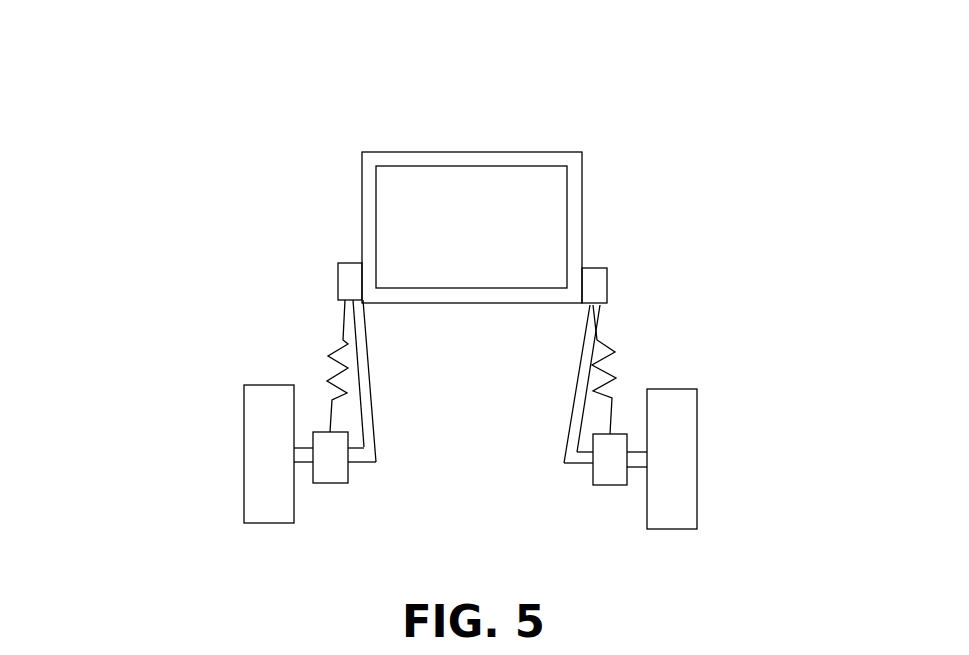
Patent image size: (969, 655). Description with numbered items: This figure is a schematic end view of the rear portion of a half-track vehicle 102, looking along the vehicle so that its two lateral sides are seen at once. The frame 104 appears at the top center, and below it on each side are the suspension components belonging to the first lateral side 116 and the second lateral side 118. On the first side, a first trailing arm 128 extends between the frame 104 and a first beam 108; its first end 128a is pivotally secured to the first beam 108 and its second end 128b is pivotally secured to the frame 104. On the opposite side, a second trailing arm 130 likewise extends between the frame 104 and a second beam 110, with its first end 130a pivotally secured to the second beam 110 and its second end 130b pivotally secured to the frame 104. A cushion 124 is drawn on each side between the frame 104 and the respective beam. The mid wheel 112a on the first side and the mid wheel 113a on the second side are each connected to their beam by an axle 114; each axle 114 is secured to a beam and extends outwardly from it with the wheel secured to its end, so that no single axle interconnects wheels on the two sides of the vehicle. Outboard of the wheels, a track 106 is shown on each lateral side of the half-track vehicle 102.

The half-track vehicle 102 is at (531, 165).
The frame 104 is at (582, 180).
The track 106 is at (471, 433).
The first beam 108 is at (337, 483).
The second beam 110 is at (613, 485).
The mid wheel 112a is at (243, 463).
The mid wheel 113a is at (697, 457).
The axle 114 is at (300, 467).
The first lateral side 116 is at (305, 274).
The second lateral side 118 is at (635, 265).
The cushion 124 is at (333, 350).
The first trailing arm 128 is at (420, 398).
The first end of first trailing arm 128a is at (370, 468).
The second end of first trailing arm 128b is at (353, 305).
The second trailing arm 130 is at (540, 417).
The first end of second trailing arm 130a is at (580, 470).
The second end of second trailing arm 130b is at (587, 310).